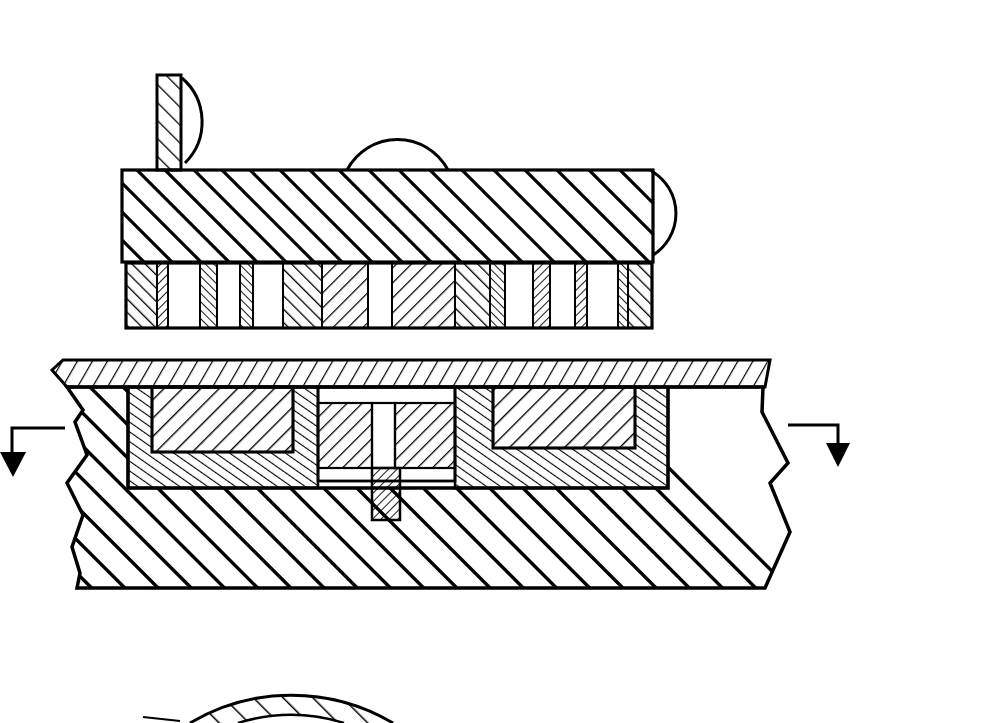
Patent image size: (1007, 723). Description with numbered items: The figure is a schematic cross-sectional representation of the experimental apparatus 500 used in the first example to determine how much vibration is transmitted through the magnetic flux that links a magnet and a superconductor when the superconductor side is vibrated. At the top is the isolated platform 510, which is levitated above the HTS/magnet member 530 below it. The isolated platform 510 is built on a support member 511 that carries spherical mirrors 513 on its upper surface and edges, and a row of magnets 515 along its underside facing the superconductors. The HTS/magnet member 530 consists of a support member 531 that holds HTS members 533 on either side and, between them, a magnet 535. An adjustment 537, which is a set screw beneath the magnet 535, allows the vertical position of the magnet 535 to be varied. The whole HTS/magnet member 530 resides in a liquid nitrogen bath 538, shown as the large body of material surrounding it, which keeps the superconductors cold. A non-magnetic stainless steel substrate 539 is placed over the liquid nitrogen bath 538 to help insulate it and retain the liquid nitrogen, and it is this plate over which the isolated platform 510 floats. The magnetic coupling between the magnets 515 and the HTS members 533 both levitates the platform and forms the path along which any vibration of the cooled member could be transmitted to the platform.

The experimental apparatus 500 is at (740, 87).
The isolated platform 510 is at (536, 150).
The support member 511 is at (218, 205).
The spherical mirrors 513 is at (196, 96).
The magnets 515 is at (200, 295).
The HTS/magnet member 530 is at (809, 552).
The support member 531 is at (555, 468).
The HTS members 533 is at (207, 430).
The magnet 535 is at (350, 443).
The adjustment 537 is at (383, 518).
The liquid nitrogen bath 538 is at (707, 495).
The non-magnetic stainless steel substrate 539 is at (128, 372).